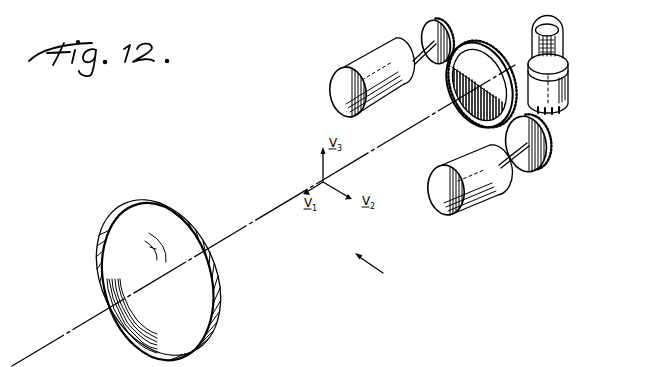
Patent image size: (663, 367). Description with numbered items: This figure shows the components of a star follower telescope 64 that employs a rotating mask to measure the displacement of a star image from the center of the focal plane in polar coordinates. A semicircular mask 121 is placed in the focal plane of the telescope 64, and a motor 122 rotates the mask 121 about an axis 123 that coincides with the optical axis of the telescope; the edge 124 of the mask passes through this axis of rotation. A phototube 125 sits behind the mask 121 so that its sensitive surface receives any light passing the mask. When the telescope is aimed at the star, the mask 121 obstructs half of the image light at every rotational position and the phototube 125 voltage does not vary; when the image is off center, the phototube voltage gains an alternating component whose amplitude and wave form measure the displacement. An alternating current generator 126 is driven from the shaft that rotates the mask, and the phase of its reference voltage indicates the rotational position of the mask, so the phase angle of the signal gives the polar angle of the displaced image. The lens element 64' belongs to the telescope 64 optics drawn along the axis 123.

The semicircular mask 121 is at (475, 122).
The motor 122 is at (490, 193).
The axis 123 is at (82, 322).
The edge of the mask 124 is at (462, 80).
The phototube 125 is at (564, 38).
The alternating current generator 126 is at (352, 68).
The telescope 64 is at (378, 272).
The lens 64' is at (166, 273).